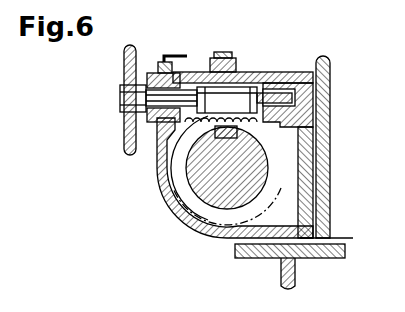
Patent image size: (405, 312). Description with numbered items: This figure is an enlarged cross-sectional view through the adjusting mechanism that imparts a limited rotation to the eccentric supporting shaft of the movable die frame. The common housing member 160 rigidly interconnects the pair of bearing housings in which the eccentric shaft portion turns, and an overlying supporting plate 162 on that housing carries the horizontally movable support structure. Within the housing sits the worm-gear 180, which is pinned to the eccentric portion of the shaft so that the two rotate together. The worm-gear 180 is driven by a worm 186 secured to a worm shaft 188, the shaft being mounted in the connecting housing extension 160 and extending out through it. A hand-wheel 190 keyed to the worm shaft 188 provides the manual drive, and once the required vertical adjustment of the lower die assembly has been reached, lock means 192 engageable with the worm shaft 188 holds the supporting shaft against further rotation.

The common housing member 160 is at (312, 190).
The supporting plate 162 is at (330, 220).
The worm-gear 180 is at (274, 143).
The worm 186 is at (236, 97).
The worm shaft 188 is at (330, 85).
The hand-wheel 190 is at (130, 45).
The lock means 192 is at (161, 64).